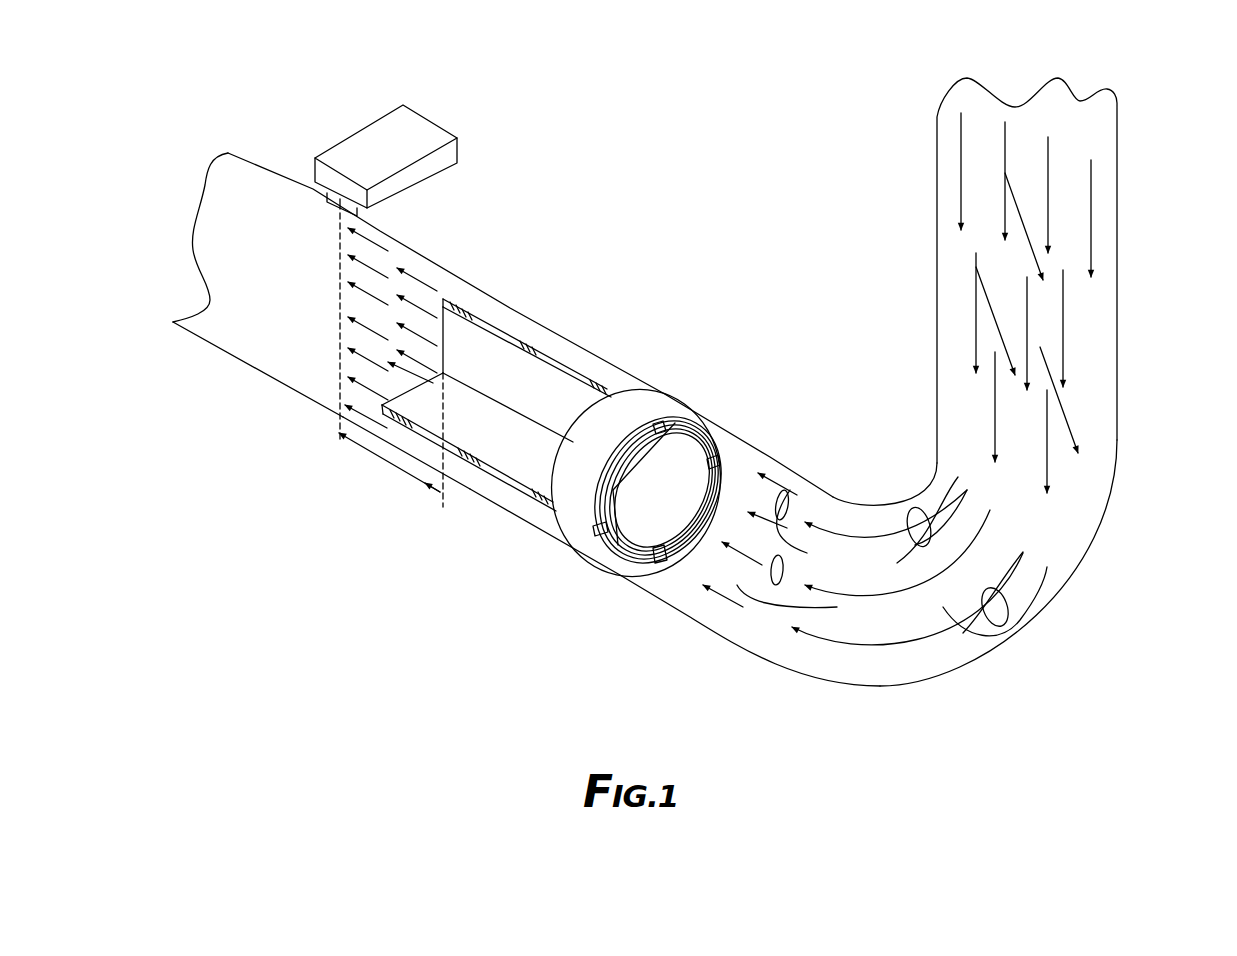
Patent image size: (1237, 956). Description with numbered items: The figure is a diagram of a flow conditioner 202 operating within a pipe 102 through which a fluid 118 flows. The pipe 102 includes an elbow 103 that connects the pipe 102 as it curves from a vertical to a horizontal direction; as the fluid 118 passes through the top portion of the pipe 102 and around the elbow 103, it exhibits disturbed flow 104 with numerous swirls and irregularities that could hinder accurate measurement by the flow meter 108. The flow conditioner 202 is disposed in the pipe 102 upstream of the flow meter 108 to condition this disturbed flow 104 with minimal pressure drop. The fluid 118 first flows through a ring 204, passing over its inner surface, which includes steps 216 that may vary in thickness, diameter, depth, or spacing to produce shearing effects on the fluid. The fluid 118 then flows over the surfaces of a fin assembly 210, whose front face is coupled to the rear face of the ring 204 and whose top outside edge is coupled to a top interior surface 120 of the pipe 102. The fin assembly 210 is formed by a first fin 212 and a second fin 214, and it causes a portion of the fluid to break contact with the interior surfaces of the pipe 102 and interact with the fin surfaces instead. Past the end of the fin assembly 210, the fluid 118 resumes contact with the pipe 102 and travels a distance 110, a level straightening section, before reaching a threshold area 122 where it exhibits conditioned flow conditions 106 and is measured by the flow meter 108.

The pipe 102 is at (937, 162).
The elbow 103 is at (925, 480).
The disturbed flow 104 is at (930, 647).
The conditioned flow conditions 106 is at (420, 283).
The flow meter 108 is at (358, 150).
The distance 110 is at (385, 462).
The fluid 118 is at (1092, 192).
The top interior surface 120 is at (560, 360).
The threshold area 122 is at (337, 238).
The flow conditioner 202 is at (637, 357).
The ring 204 is at (638, 588).
The fin assembly 210 is at (542, 540).
The first fin 212 is at (477, 409).
The second fin 214 is at (523, 432).
The steps 216 is at (677, 565).